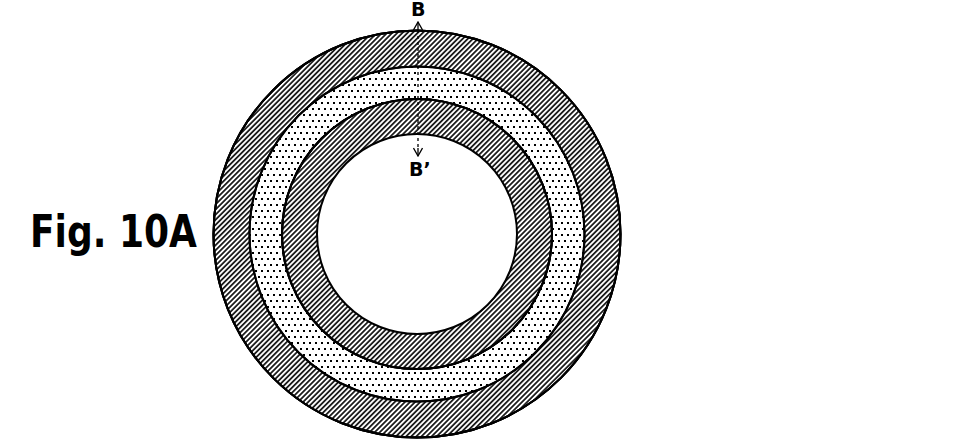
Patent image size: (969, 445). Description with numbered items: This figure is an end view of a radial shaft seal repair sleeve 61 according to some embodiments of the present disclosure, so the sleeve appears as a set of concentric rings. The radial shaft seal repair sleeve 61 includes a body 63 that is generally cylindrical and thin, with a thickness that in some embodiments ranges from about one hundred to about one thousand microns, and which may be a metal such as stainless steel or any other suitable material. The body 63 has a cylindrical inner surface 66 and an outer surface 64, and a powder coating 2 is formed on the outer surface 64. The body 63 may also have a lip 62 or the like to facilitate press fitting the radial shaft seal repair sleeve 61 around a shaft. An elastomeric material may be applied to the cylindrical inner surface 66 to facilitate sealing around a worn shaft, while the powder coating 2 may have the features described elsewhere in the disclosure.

The radial shaft seal repair sleeve 61 is at (239, 96).
The lip 62 is at (513, 72).
The powder coating 2 is at (557, 178).
The body 63 is at (510, 142).
The outer surface 64 is at (284, 233).
The cylindrical inner surface 66 is at (519, 414).